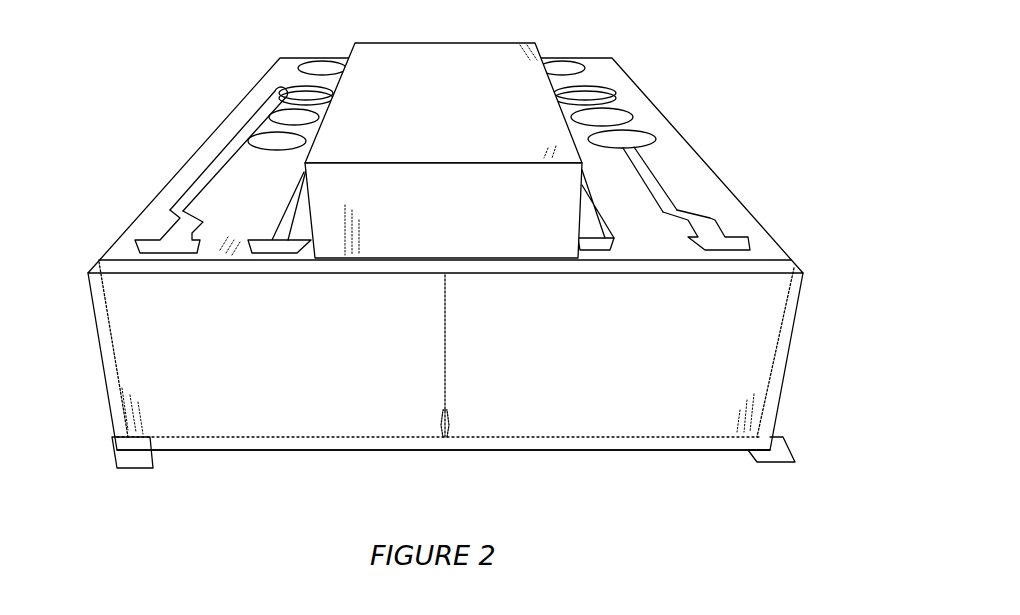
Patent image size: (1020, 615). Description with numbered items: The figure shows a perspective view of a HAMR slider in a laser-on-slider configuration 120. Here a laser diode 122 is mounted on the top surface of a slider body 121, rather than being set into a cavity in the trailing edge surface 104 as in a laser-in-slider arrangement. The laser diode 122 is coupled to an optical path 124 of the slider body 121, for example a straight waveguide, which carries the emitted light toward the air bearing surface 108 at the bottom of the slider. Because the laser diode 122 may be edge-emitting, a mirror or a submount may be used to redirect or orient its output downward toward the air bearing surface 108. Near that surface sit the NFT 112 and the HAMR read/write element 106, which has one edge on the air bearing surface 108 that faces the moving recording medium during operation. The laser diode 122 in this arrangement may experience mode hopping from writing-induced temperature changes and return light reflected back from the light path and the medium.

The laser-on-slider configuration 120 is at (718, 99).
The slider body 121 is at (135, 237).
The laser diode 122 is at (528, 43).
The optical path 124 is at (447, 340).
The read/write element 106 is at (451, 437).
The NFT 112 is at (443, 441).
The trailing edge surface 104 is at (138, 470).
The air bearing surface 108 is at (785, 465).